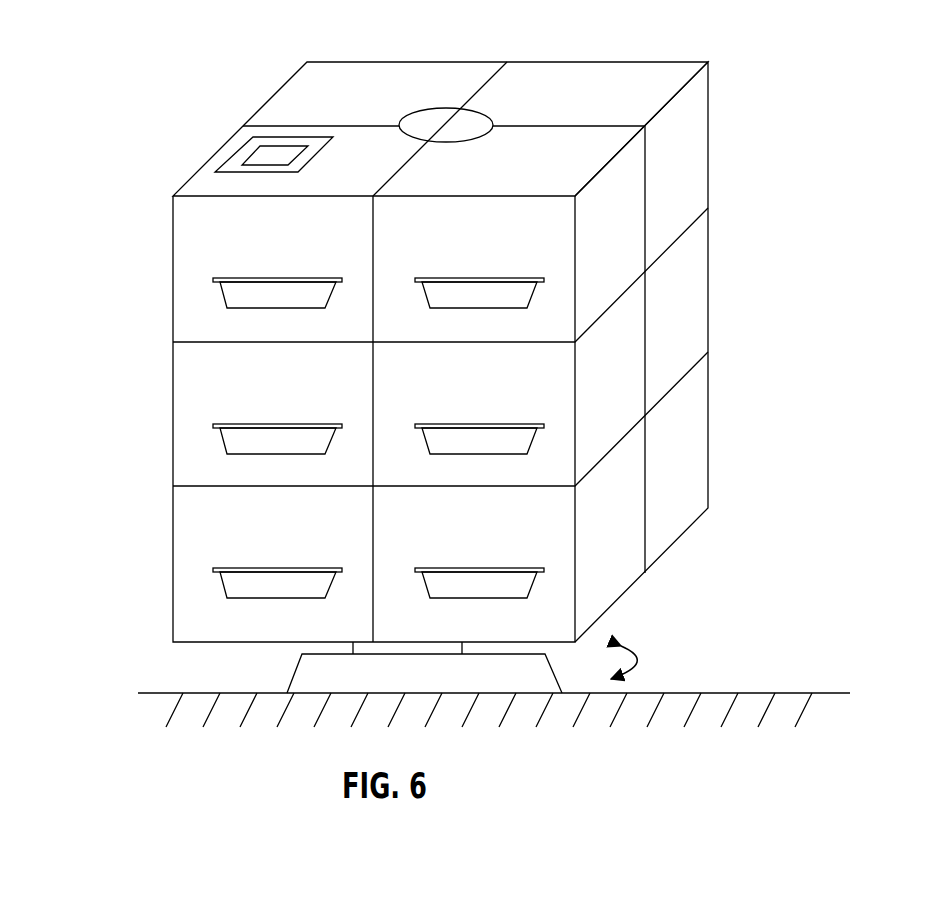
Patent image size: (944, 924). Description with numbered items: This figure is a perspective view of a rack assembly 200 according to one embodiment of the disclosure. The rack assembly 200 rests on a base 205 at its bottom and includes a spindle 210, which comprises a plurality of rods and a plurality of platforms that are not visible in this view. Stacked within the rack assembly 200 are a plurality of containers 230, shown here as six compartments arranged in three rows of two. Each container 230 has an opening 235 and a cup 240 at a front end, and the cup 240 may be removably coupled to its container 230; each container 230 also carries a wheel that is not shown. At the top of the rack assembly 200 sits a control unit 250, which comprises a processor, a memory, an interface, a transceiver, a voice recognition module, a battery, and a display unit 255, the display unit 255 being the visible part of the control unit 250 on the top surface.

The rack assembly 200 is at (141, 50).
The base 205 is at (315, 677).
The spindle 210 is at (445, 108).
The container 230 is at (185, 225).
The opening 235 is at (213, 279).
The cup 240 is at (253, 303).
The control unit 250 is at (240, 150).
The display unit 255 is at (283, 142).